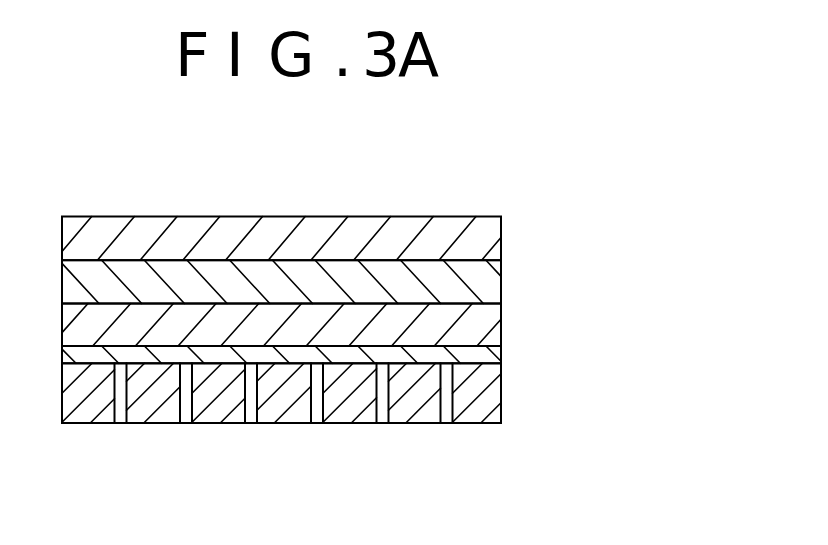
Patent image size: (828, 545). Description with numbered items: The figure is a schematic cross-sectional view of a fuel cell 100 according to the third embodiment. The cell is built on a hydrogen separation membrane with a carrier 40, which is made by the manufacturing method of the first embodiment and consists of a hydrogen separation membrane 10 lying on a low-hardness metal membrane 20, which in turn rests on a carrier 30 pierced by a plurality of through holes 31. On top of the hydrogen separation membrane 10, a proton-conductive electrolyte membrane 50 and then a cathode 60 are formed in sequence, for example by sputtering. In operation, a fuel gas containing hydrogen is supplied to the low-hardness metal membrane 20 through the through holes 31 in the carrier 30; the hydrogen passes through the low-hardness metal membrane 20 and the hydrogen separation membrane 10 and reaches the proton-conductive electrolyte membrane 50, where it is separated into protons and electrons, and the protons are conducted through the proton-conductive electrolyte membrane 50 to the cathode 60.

The fuel cell 100 is at (588, 212).
The cathode 60 is at (503, 220).
The proton-conductive electrolyte membrane 50 is at (503, 273).
The hydrogen separation membrane with a carrier 40 is at (567, 272).
The hydrogen separation membrane 10 is at (503, 315).
The low-hardness metal membrane 20 is at (503, 356).
The carrier 30 is at (503, 403).
The through holes 31 is at (447, 424).